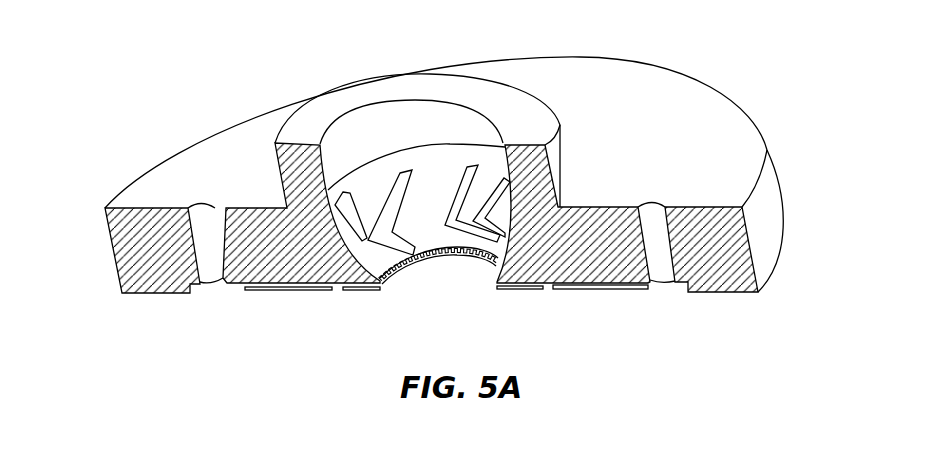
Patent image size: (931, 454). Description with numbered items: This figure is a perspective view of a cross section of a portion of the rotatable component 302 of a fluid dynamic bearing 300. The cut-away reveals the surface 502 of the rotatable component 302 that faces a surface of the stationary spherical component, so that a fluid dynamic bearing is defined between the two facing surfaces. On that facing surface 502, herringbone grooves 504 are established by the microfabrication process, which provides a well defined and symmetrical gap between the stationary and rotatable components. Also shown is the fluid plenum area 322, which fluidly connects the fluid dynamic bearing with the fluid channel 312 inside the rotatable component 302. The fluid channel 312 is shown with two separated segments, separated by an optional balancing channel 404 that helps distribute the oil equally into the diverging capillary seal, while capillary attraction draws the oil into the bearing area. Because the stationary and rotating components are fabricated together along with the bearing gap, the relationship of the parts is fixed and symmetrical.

The fluid dynamic bearing 300 is at (169, 113).
The rotatable component 302 is at (123, 248).
The fluid channel 312 is at (435, 270).
The fluid plenum area 322 is at (407, 283).
The balancing channel 404 is at (547, 287).
The surface 502 is at (372, 192).
The herringbone grooves 504 is at (466, 172).